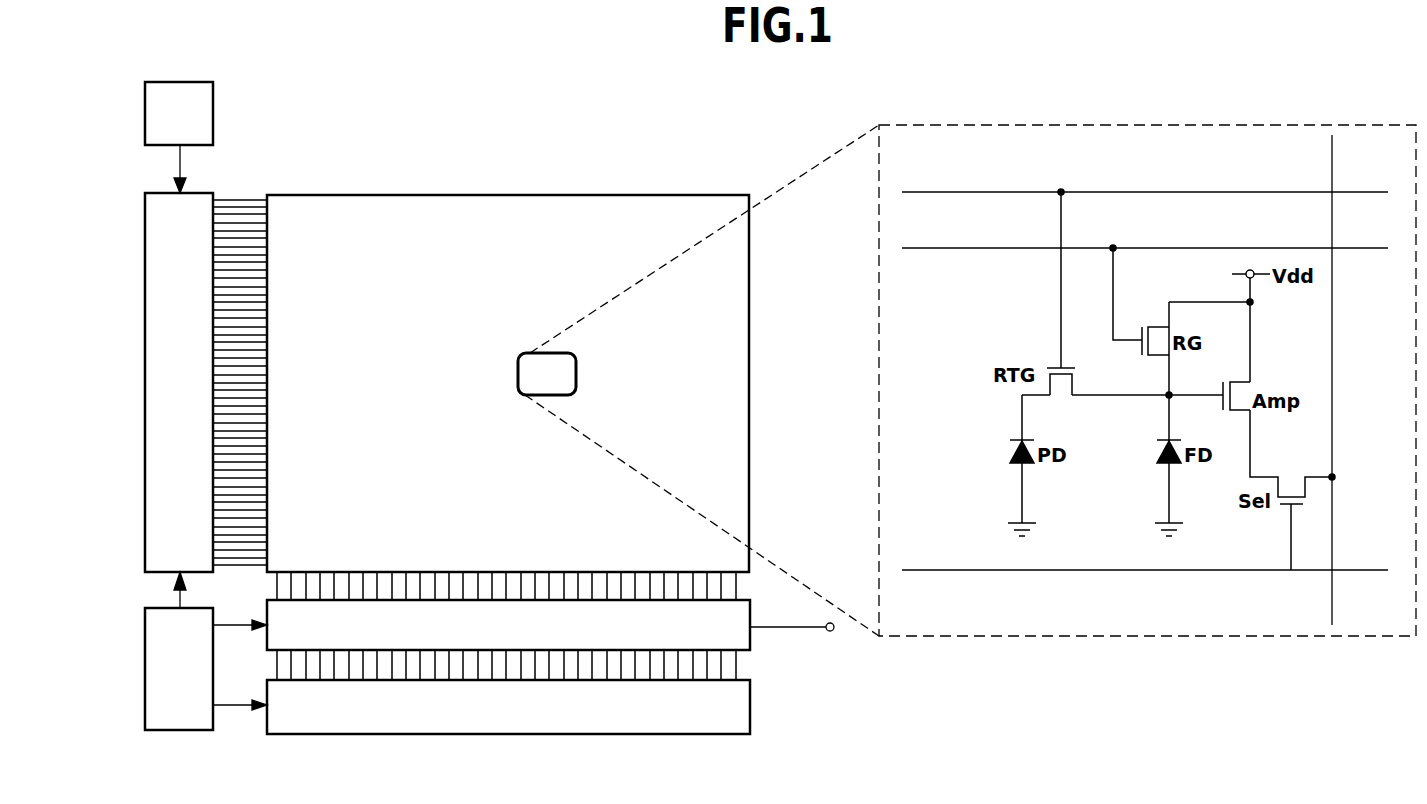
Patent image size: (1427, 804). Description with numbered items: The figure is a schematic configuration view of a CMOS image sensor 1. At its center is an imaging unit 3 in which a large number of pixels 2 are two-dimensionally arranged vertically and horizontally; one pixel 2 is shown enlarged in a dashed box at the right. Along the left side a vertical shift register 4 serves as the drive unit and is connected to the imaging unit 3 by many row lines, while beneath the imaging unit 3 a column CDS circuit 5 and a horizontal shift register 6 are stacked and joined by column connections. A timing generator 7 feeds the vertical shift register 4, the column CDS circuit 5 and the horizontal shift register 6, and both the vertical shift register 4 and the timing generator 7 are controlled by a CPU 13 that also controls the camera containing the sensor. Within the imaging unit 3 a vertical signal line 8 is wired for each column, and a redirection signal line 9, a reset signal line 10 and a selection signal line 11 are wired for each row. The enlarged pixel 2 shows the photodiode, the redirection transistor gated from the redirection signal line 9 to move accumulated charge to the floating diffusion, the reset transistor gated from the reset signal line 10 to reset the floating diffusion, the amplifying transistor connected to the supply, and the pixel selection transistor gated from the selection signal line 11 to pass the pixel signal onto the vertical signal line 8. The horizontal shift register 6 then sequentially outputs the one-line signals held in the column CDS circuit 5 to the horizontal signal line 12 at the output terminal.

The CMOS image sensor 1 is at (490, 158).
The pixel 2 is at (576, 372).
The imaging unit 3 is at (571, 194).
The vertical shift register 4 is at (199, 193).
The column CDS circuit 5 is at (750, 648).
The horizontal shift register 6 is at (497, 734).
The timing generator 7 is at (180, 730).
The vertical signal line 8 is at (1333, 163).
The redirection signal line 9 is at (1181, 191).
The reset signal line 10 is at (1183, 247).
The selection signal line 11 is at (1116, 571).
The horizontal signal line 12 is at (803, 627).
The CPU 13 is at (213, 108).